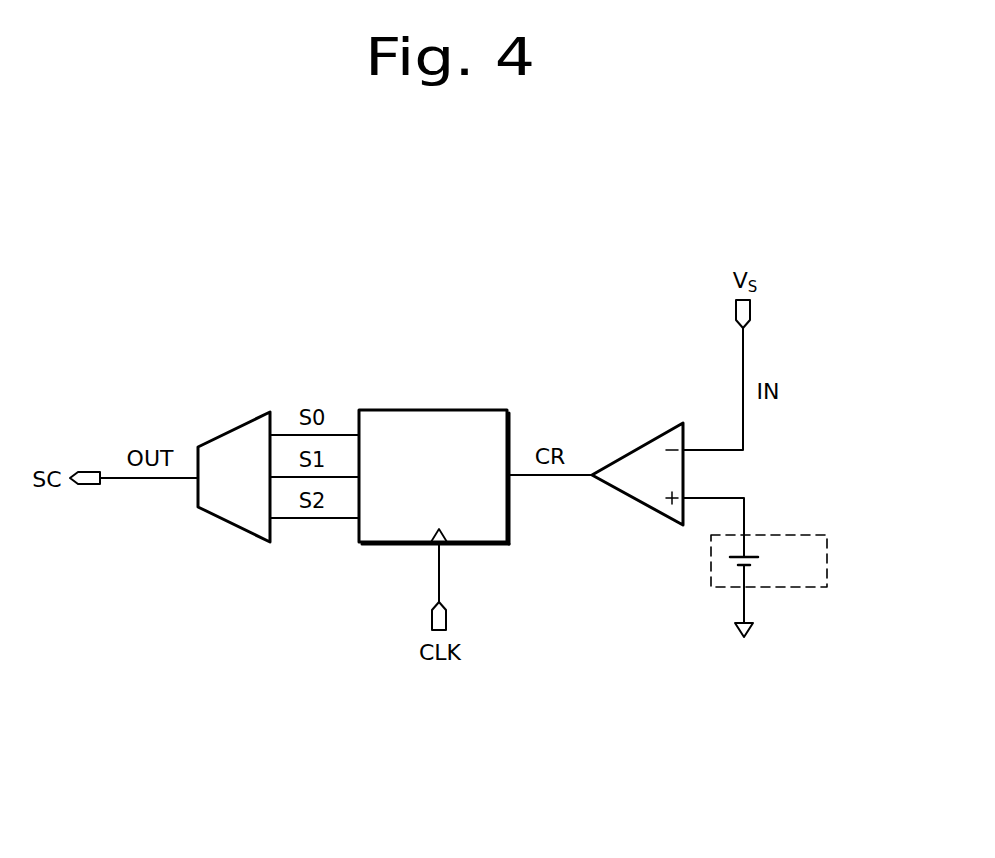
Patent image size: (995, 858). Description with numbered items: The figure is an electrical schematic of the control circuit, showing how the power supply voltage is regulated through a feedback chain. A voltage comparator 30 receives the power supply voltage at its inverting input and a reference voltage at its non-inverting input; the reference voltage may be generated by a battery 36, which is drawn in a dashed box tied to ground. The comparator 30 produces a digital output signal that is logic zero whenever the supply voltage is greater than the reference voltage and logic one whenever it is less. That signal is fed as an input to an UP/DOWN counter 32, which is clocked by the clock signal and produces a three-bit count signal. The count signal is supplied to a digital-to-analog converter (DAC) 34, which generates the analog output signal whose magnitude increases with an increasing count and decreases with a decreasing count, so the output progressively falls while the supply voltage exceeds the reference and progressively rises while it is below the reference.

The voltage comparator 30 is at (638, 505).
The UP/DOWN counter 32 is at (430, 410).
The digital-to-analog converter (DAC) 34 is at (231, 432).
The battery 36 is at (828, 560).